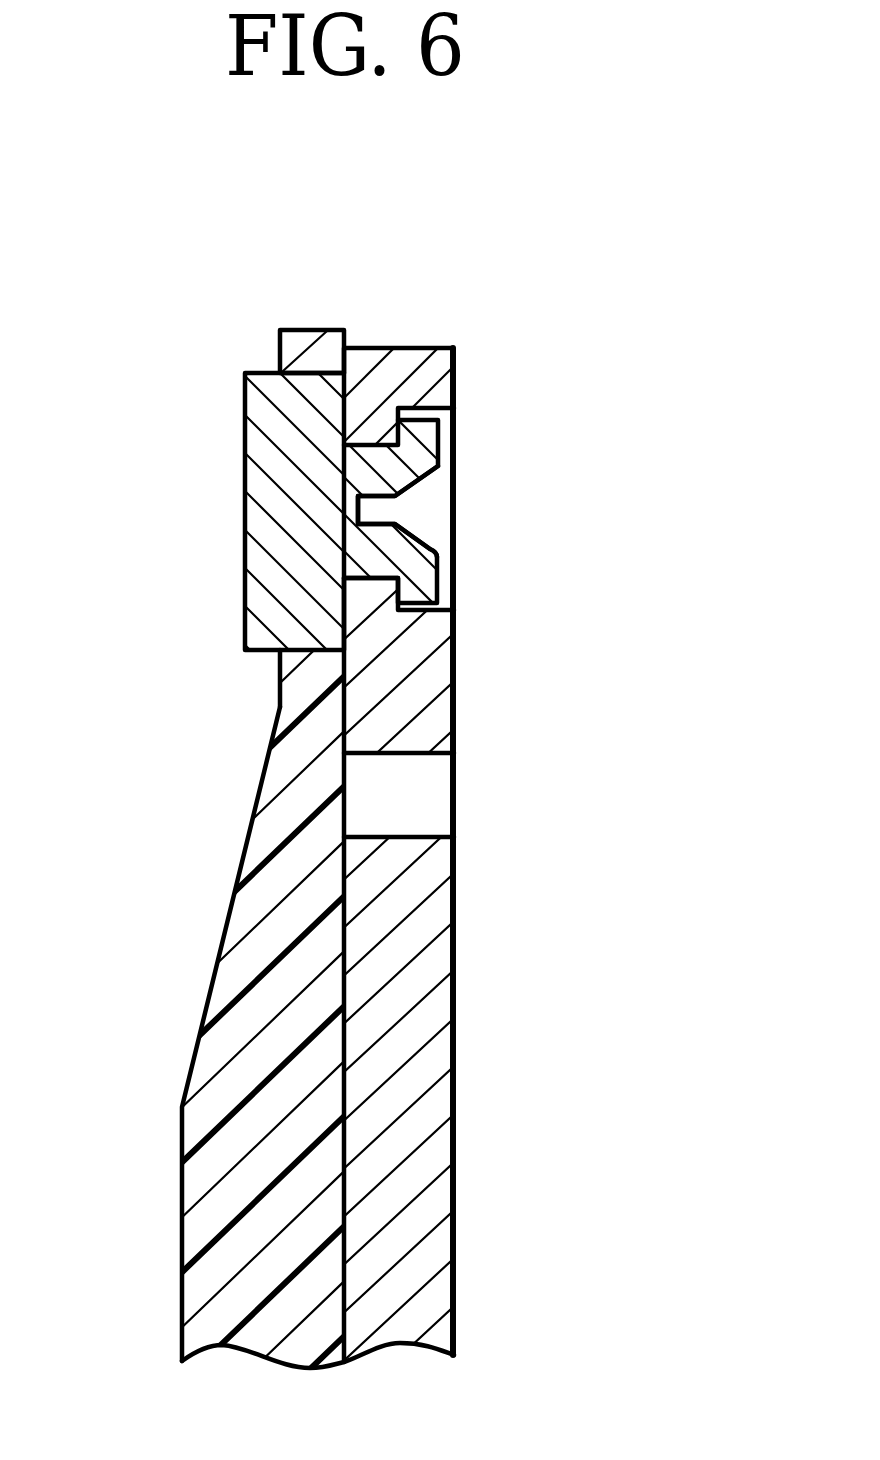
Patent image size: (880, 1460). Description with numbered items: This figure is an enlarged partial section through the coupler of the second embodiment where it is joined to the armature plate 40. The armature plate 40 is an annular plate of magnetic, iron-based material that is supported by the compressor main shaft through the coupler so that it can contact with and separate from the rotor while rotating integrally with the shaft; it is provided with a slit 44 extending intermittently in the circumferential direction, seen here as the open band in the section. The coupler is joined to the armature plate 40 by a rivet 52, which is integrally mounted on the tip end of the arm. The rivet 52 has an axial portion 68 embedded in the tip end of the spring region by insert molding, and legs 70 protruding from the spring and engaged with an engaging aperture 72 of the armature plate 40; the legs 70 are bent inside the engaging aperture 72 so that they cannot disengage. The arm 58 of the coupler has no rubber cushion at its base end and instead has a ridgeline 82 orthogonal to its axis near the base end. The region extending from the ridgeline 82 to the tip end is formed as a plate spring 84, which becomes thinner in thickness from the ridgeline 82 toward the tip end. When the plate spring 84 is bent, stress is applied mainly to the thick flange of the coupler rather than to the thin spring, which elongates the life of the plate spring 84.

The armature plate 40 is at (407, 360).
The slit 44 is at (427, 800).
The rivet 52 is at (263, 515).
The arm 58 is at (215, 1267).
The axial portion 68 is at (309, 382).
The legs 70 is at (432, 435).
The engaging aperture 72 is at (428, 513).
The ridgeline 82 is at (183, 1107).
The plate spring 84 is at (262, 850).